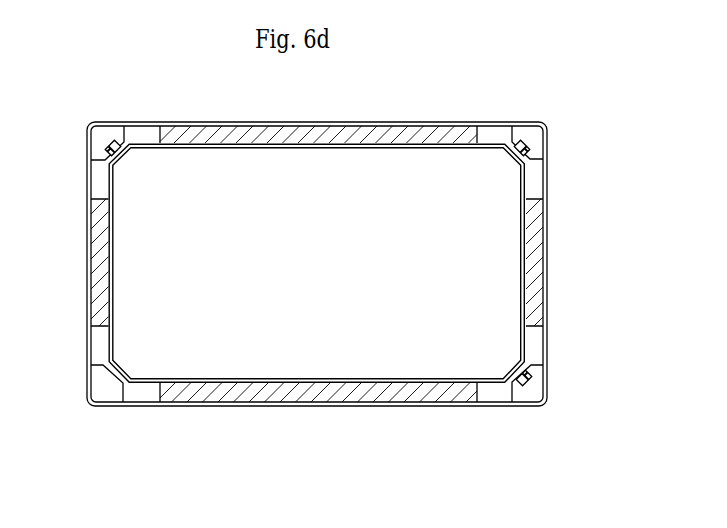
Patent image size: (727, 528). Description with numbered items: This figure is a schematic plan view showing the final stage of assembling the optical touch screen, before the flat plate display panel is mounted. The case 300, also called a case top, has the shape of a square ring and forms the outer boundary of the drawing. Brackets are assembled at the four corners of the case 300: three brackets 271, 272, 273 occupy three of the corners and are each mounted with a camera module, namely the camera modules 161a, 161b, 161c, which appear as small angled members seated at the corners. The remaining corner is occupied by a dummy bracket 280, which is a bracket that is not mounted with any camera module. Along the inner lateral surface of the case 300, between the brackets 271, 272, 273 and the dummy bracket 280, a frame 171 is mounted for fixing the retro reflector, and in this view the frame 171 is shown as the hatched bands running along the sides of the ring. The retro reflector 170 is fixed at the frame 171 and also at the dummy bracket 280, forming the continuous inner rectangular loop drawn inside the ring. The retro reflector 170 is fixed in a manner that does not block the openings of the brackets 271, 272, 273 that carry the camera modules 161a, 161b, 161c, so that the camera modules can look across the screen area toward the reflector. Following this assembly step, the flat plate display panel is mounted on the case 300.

The camera module 161a is at (113, 142).
The camera module 161b is at (530, 141).
The camera module 161c is at (532, 379).
The retro reflector 170 is at (379, 148).
The frame 171 is at (309, 137).
The bracket 271 is at (101, 182).
The bracket 272 is at (535, 182).
The bracket 273 is at (535, 343).
The dummy bracket 280 is at (101, 342).
The case 300 is at (545, 227).